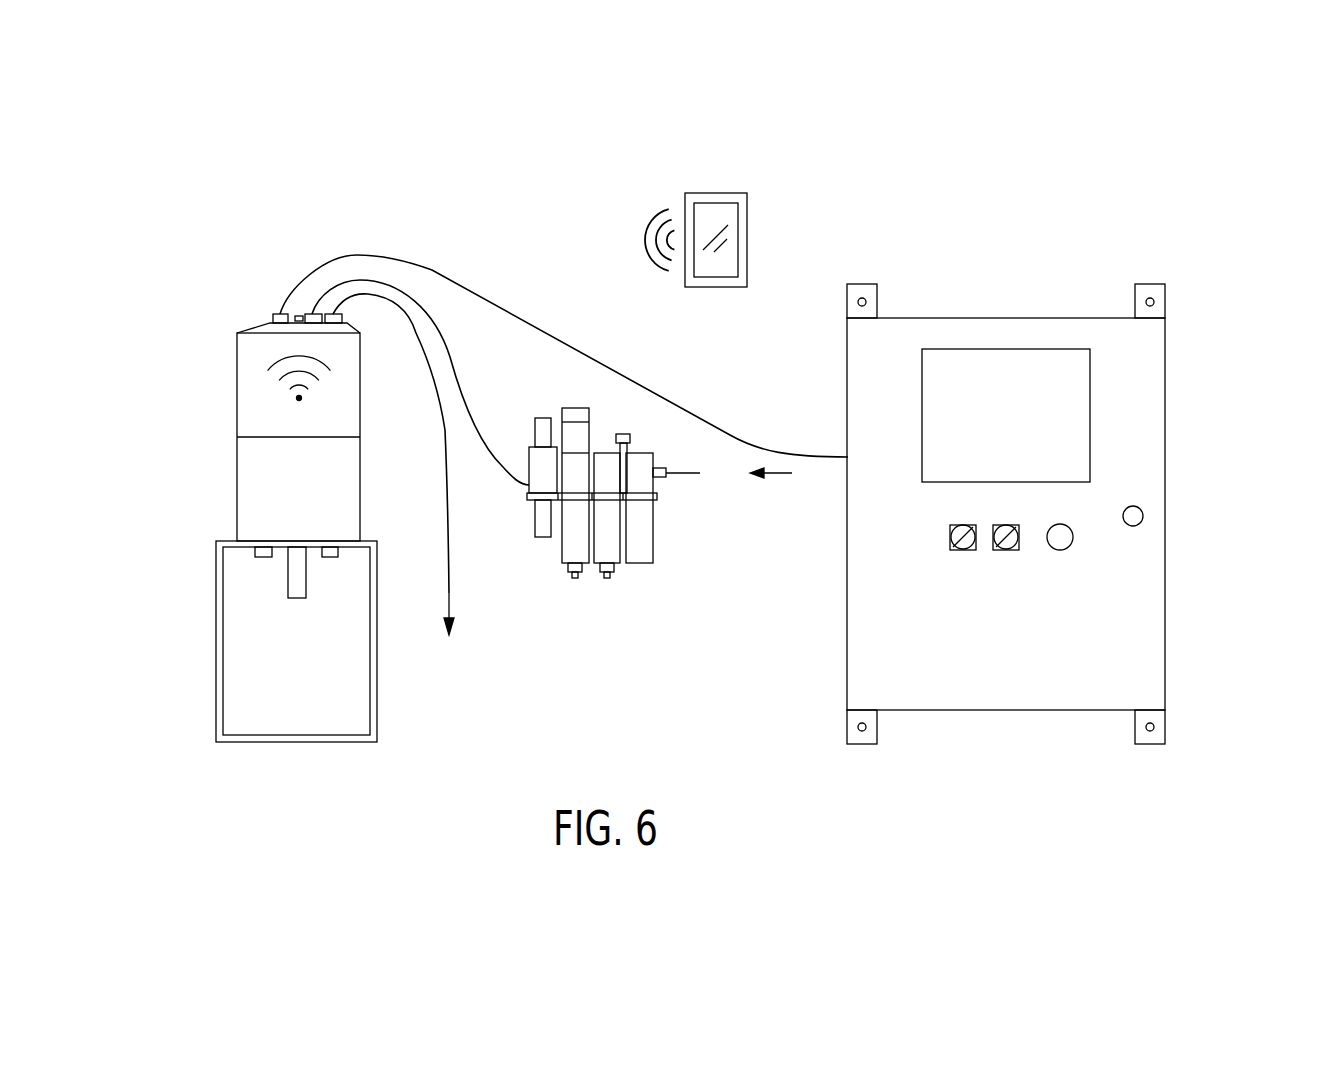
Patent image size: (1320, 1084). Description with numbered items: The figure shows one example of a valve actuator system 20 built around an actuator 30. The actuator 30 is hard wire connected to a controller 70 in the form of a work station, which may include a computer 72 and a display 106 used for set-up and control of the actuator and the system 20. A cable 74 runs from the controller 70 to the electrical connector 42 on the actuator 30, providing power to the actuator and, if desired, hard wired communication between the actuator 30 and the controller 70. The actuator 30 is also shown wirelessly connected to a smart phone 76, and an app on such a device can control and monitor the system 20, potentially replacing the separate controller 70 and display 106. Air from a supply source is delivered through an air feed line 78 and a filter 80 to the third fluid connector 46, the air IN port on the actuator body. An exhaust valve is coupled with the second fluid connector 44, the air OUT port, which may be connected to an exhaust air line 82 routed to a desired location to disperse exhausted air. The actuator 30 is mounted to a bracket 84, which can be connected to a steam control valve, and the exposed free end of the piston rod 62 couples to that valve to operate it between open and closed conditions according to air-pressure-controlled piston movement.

The valve actuator system 20 is at (818, 222).
The actuator 30 is at (226, 383).
The electrical connector 42 is at (275, 314).
The second fluid connector 44 is at (342, 318).
The third fluid connector 46 is at (311, 314).
The piston rod 62 is at (298, 583).
The controller 70 is at (1180, 380).
The computer 72 is at (1127, 455).
The cable 74 is at (598, 358).
The smart phone 76 is at (717, 193).
The air feed line 78 is at (483, 427).
The filter 80 is at (629, 574).
The exhaust air line 82 is at (446, 488).
The bracket 84 is at (221, 628).
The display 106 is at (1028, 431).